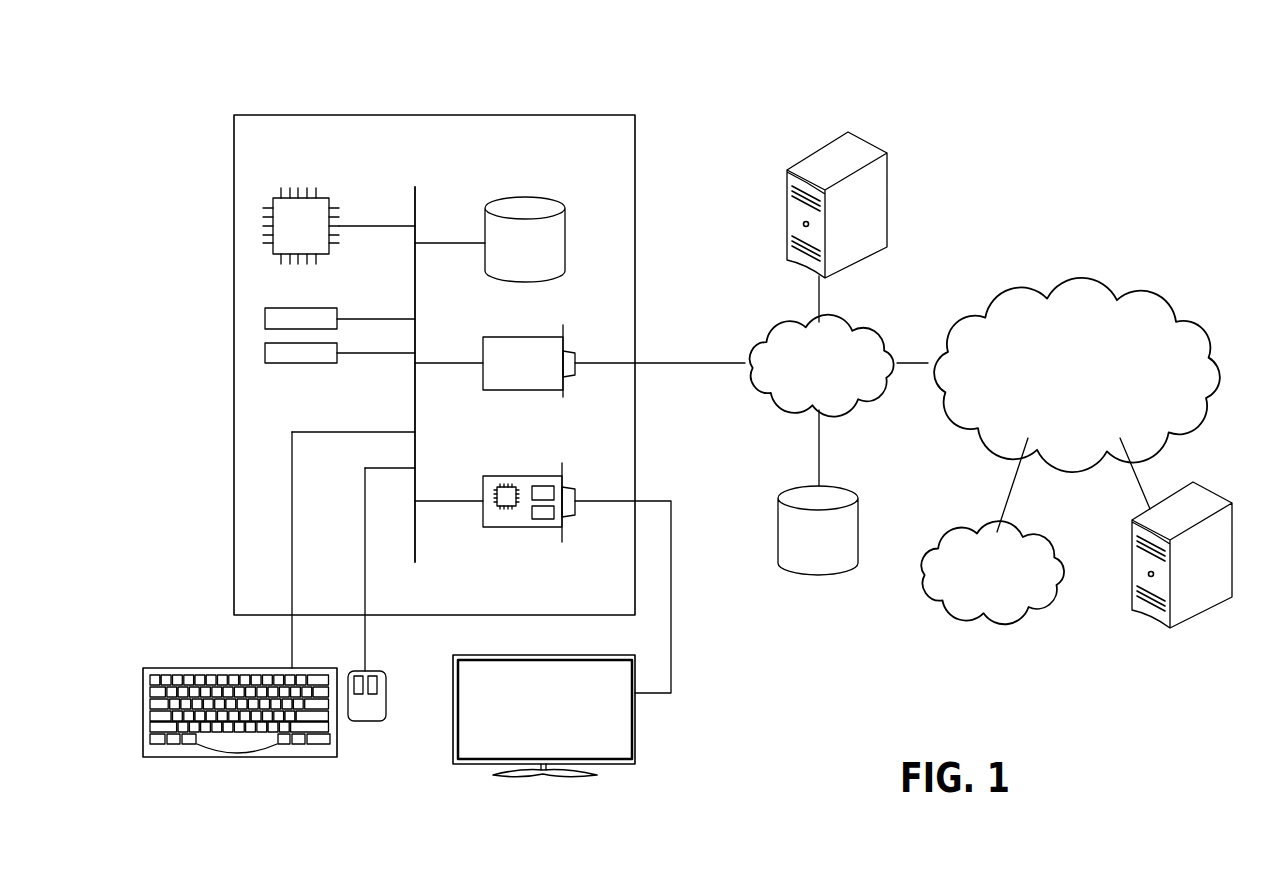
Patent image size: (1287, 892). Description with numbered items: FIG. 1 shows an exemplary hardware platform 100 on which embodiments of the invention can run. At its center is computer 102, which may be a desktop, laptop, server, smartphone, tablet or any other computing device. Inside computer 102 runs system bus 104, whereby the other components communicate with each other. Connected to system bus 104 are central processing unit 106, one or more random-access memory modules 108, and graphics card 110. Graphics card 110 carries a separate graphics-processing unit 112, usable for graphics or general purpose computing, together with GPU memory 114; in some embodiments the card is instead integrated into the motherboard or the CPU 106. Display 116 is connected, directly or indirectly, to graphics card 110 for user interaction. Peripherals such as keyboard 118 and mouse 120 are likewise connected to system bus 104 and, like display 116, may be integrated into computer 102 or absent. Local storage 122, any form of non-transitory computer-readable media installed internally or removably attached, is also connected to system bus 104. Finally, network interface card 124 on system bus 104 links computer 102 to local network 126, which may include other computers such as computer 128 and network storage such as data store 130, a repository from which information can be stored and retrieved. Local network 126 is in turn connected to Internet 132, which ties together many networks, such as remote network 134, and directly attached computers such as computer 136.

The system 100 is at (1165, 118).
The computer 102 is at (592, 113).
The system bus 104 is at (417, 198).
The central processing unit 106 is at (322, 197).
The random-access memory modules 108 is at (342, 349).
The graphics card 110 is at (554, 562).
The graphics-processing unit 112 is at (506, 506).
The GPU memory 114 is at (540, 517).
The display 116 is at (635, 747).
The keyboard 118 is at (242, 758).
The mouse 120 is at (367, 723).
The local storage 122 is at (567, 227).
The network interface card 124 is at (483, 348).
The local network 126 is at (872, 322).
The computer 128 is at (872, 140).
The data store 130 is at (848, 490).
The Internet 132 is at (1120, 288).
The remote network 134 is at (1043, 530).
The computer 136 is at (1207, 488).